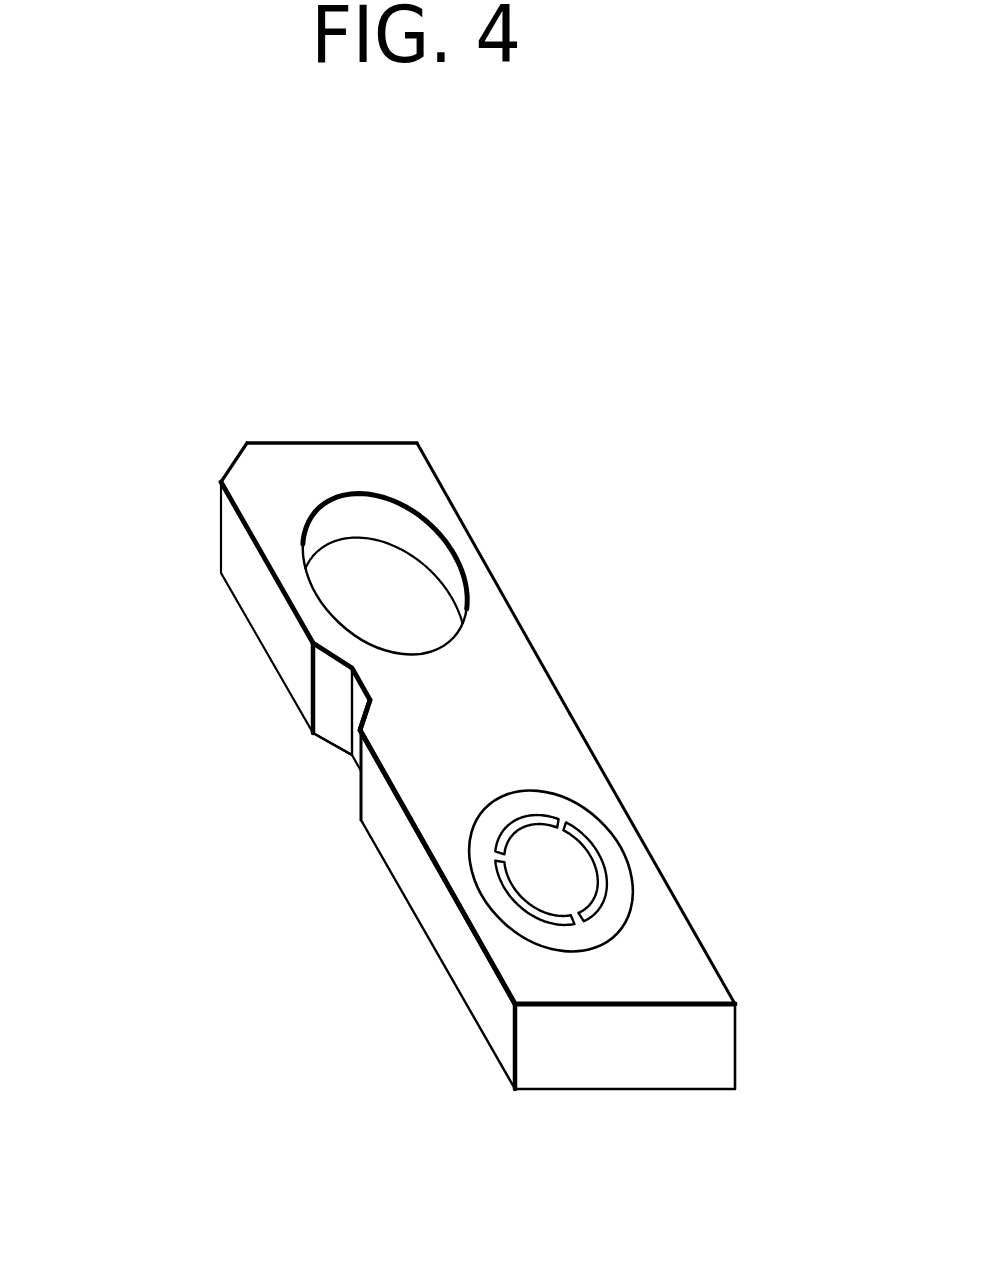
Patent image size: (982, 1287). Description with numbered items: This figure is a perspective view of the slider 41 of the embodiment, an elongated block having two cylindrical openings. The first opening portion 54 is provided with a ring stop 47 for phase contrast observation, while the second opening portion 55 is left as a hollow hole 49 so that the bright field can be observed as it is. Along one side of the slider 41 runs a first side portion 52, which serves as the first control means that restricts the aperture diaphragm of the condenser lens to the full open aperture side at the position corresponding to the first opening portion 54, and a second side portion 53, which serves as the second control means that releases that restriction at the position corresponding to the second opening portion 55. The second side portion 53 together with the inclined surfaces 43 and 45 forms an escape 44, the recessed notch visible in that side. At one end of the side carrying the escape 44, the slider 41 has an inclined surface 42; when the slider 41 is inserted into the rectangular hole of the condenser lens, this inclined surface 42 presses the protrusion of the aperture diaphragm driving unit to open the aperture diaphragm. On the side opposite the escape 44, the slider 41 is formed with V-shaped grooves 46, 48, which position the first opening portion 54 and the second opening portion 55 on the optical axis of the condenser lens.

The slider 41 is at (523, 687).
The inclined surface 42 is at (212, 473).
The inclined surface 43 is at (323, 688).
The escape 44 is at (277, 733).
The inclined surface 45 is at (360, 788).
The V-shaped groove 46 is at (639, 867).
The ring stop 47 is at (607, 857).
The V-shaped groove 48 is at (474, 575).
The hollow hole 49 is at (403, 560).
The first side portion 52 is at (443, 927).
The second side portion 53 is at (367, 688).
The first opening portion 54 is at (583, 807).
The second opening portion 55 is at (372, 493).